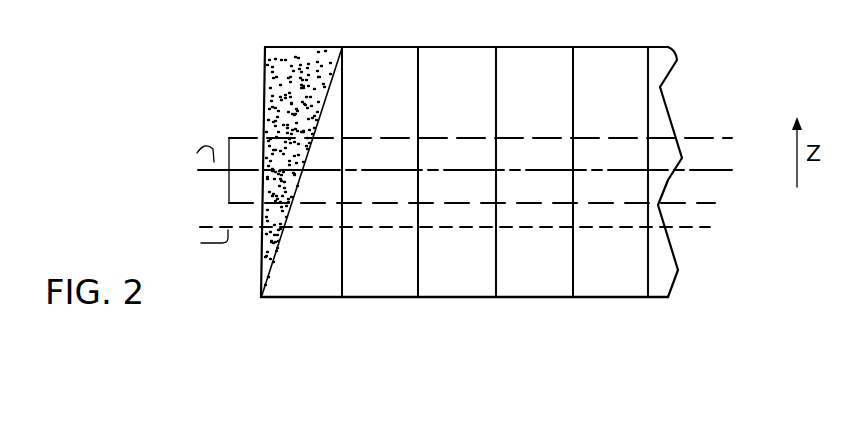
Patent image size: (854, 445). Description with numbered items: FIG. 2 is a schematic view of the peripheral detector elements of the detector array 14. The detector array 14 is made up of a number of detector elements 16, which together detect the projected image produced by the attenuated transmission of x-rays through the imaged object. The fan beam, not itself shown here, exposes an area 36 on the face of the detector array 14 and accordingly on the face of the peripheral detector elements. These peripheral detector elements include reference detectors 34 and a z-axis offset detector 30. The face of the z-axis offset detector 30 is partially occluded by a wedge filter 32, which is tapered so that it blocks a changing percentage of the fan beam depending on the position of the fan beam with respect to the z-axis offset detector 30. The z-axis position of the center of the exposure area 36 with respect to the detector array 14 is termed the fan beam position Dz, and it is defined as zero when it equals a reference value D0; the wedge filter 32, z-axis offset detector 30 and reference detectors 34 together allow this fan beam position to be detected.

The detector array 14 is at (188, 192).
The detector elements 16 is at (468, 284).
The z-axis offset detector 30 is at (307, 283).
The wedge filter 32 is at (272, 64).
The reference detectors 34 is at (443, 306).
The exposure area 36 is at (695, 132).